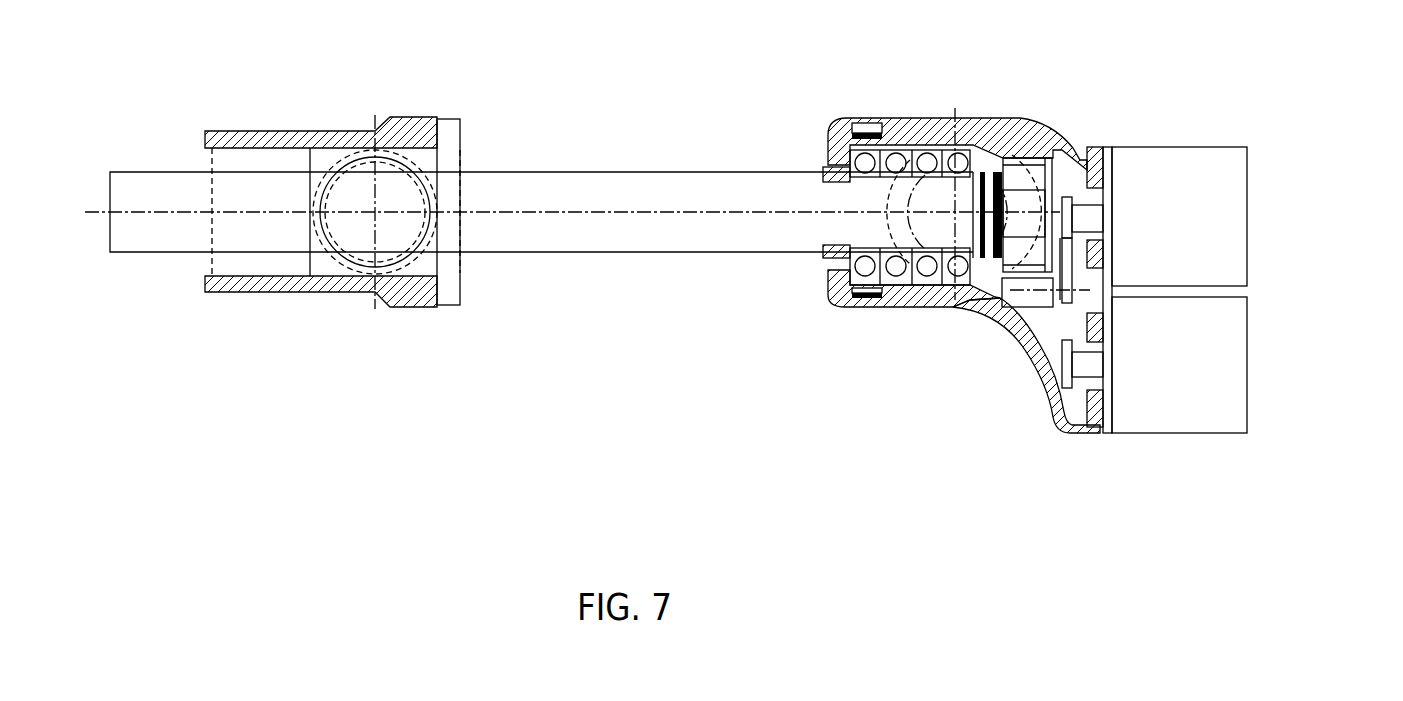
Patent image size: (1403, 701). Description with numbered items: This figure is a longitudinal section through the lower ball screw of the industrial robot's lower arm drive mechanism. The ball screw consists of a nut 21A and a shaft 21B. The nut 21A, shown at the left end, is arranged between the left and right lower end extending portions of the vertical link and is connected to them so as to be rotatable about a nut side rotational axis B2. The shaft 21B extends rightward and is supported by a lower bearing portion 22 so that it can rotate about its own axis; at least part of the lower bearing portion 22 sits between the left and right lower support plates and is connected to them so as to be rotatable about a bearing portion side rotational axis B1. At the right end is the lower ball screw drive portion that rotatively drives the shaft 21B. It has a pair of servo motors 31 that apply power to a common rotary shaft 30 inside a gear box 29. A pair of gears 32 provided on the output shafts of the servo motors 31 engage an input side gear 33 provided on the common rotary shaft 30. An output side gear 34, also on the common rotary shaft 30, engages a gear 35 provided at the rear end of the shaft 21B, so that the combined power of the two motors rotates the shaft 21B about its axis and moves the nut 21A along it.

The nut 21A is at (385, 122).
The shaft 21B is at (657, 246).
The bearing portion side rotational axis B1 is at (950, 210).
The nut side rotational axis B2 is at (375, 212).
The lower bearing portion 22 is at (908, 305).
The gear box 29 is at (1038, 330).
The common rotary shaft 30 is at (997, 296).
The servo motors 31 is at (1228, 377).
The gears 32 is at (1067, 197).
The input side gear 33 is at (1062, 322).
The output side gear 34 is at (1000, 322).
The gear 35 is at (1030, 157).